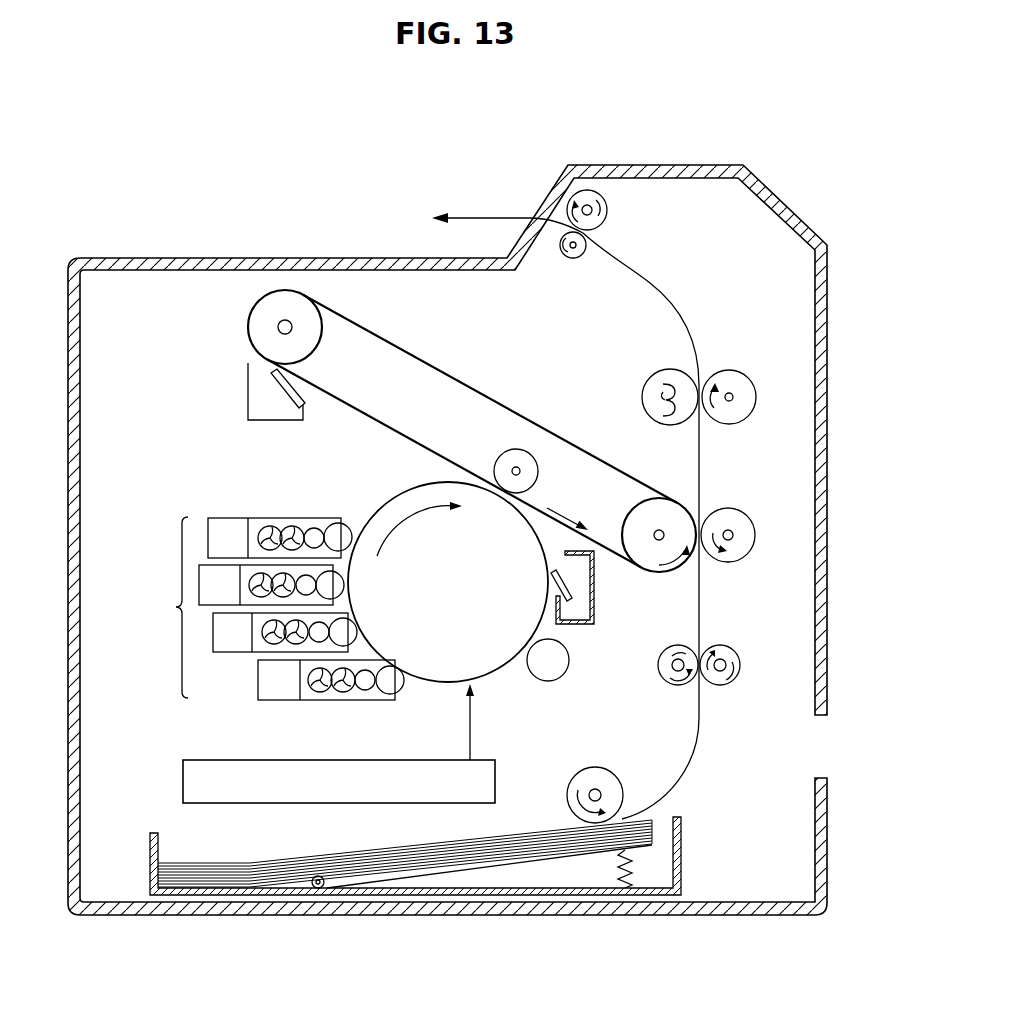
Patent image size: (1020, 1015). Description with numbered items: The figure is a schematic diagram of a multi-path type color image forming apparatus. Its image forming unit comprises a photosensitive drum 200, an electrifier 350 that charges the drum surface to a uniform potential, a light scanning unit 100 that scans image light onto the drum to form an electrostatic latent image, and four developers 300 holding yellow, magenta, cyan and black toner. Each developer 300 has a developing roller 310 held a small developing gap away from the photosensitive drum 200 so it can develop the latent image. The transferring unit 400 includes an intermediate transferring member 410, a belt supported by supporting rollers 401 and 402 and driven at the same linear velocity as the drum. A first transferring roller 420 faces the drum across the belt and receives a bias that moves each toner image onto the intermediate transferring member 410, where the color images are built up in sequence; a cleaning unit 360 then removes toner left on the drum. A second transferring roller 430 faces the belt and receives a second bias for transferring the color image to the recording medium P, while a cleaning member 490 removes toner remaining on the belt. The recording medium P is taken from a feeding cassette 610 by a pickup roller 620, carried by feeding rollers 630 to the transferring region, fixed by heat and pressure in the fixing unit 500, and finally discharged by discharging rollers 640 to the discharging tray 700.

The light scanning unit 100 is at (183, 782).
The photosensitive drum 200 is at (377, 510).
The developer 300 is at (283, 608).
The developing roller 310 is at (388, 678).
The electrifier 350 is at (556, 668).
The cleaning unit 360 is at (588, 622).
The transferring unit 400 is at (597, 418).
The supporting roller 401 is at (260, 322).
The supporting roller 402 is at (647, 515).
The intermediate transferring member 410 is at (394, 345).
The first transferring roller 420 is at (524, 455).
The second transferring roller 430 is at (750, 517).
The cleaning member 490 is at (272, 385).
The fixing unit 500 is at (775, 366).
The feeding cassette 610 is at (681, 845).
The pickup roller 620 is at (580, 780).
The feeding rollers 630 is at (740, 655).
The discharging rollers 640 is at (610, 212).
The discharging tray 700 is at (322, 257).
The recording medium P is at (497, 210).